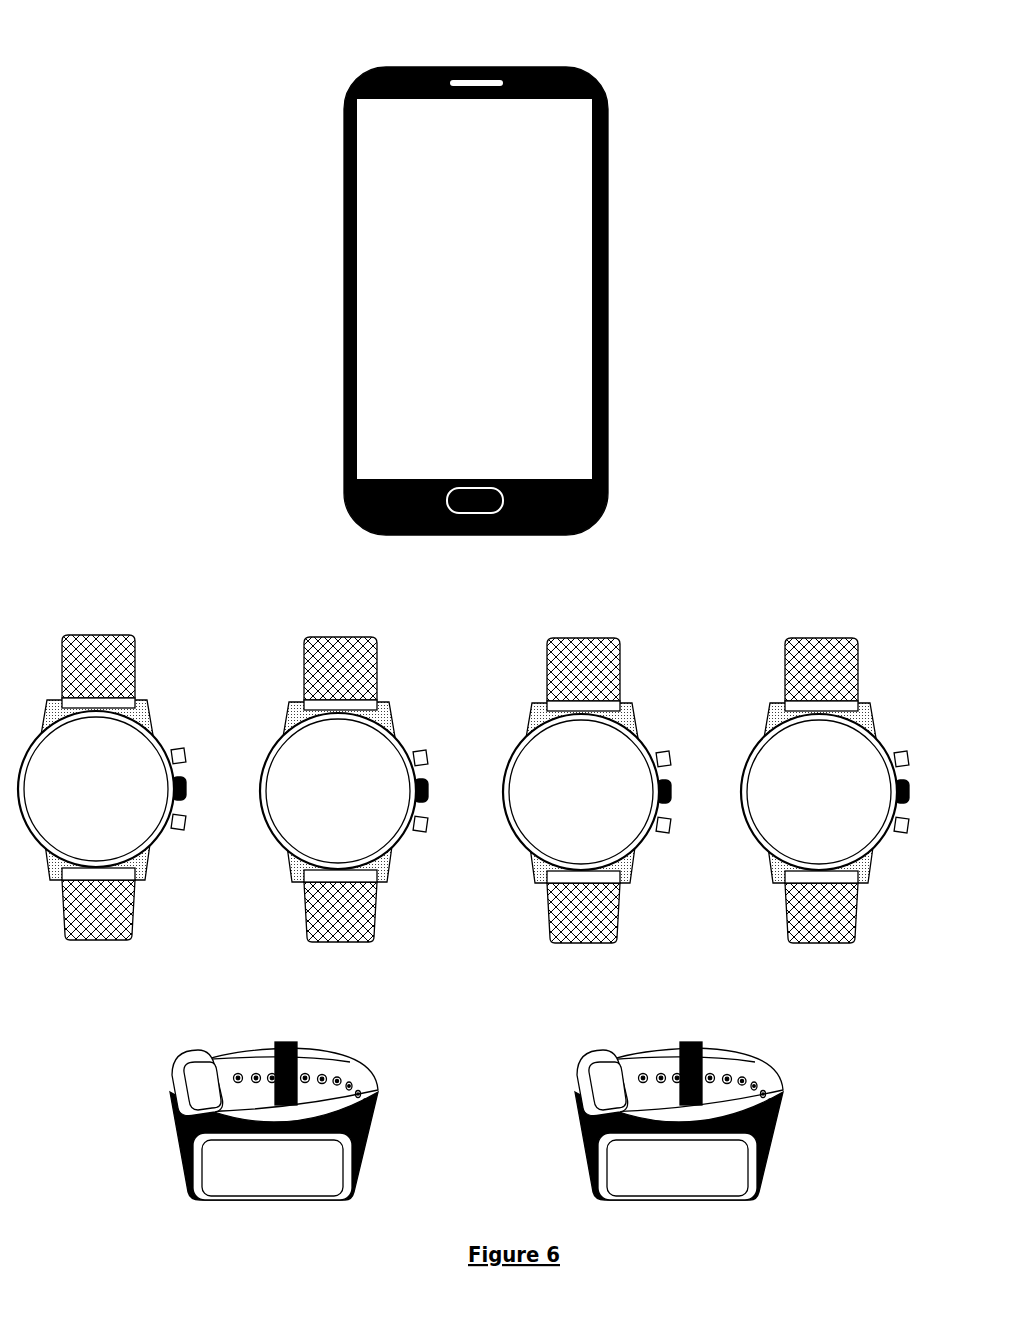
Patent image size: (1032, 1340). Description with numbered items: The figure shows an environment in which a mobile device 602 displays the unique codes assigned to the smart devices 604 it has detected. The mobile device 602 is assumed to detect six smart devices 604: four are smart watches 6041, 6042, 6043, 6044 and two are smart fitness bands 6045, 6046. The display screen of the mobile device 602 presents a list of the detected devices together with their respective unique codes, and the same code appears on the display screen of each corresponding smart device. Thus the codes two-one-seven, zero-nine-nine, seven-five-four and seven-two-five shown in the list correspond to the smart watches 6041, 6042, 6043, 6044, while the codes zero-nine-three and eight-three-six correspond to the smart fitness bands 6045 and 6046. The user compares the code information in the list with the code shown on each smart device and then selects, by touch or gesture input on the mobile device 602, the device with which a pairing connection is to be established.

The mobile device 602 is at (585, 72).
The smart devices 604 is at (476, 885).
The smart watch 6041 is at (115, 755).
The smart watch 6042 is at (357, 757).
The smart watch 6043 is at (600, 758).
The smart watch 6044 is at (838, 758).
The smart fitness band 6045 is at (337, 1052).
The smart fitness band 6046 is at (707, 1088).